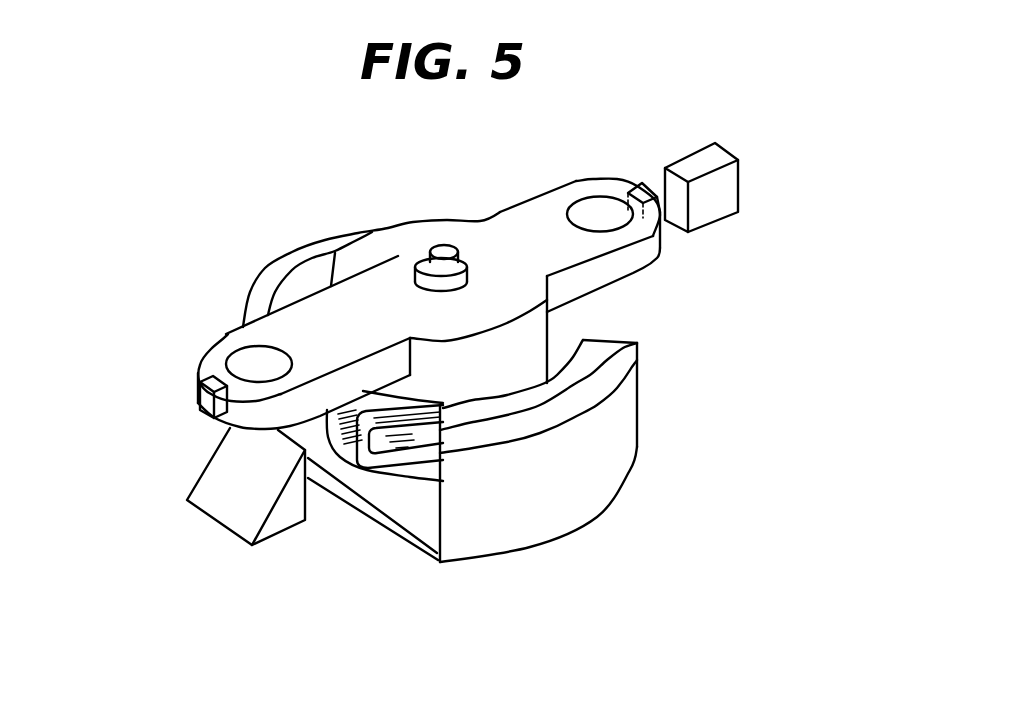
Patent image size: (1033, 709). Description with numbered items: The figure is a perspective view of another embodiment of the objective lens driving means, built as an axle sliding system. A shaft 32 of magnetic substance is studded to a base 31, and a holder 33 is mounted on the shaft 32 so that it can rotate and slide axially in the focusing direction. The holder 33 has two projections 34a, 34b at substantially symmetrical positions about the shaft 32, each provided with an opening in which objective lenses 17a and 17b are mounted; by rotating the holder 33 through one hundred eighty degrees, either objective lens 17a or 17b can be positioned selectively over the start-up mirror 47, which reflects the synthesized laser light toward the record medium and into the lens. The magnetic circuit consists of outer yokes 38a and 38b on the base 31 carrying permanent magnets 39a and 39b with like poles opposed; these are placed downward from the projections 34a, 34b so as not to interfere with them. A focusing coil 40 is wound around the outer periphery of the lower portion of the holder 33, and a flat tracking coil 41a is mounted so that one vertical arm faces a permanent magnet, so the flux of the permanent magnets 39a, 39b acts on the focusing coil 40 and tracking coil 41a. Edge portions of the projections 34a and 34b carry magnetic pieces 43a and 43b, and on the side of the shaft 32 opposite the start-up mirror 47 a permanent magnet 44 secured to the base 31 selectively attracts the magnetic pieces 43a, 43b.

The objective lens 17a is at (258, 360).
The objective lens 17b is at (603, 214).
The base 31 is at (410, 537).
The shaft 32 is at (433, 250).
The holder 33 is at (447, 242).
The projection 34a is at (255, 417).
The projection 34b is at (605, 292).
The outer yoke 38a is at (587, 480).
The outer yoke 38b is at (275, 282).
The permanent magnet 39a is at (587, 360).
The permanent magnet 39b is at (295, 295).
The focusing coil 40 is at (350, 447).
The tracking coil 41a is at (400, 473).
The magnetic piece 43a is at (200, 399).
The magnetic piece 43b is at (660, 236).
The permanent magnet 44 is at (727, 180).
The start-up mirror 47 is at (243, 505).